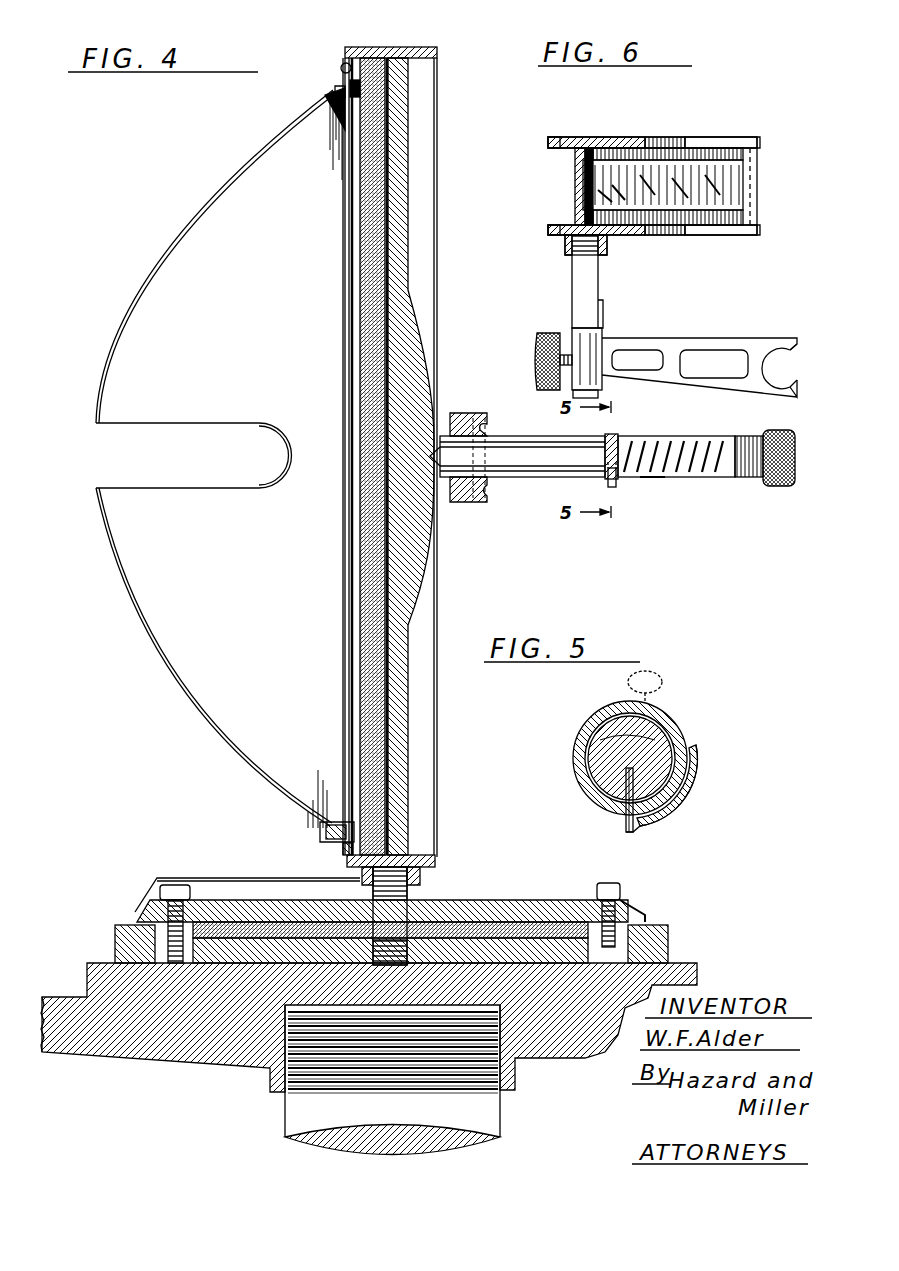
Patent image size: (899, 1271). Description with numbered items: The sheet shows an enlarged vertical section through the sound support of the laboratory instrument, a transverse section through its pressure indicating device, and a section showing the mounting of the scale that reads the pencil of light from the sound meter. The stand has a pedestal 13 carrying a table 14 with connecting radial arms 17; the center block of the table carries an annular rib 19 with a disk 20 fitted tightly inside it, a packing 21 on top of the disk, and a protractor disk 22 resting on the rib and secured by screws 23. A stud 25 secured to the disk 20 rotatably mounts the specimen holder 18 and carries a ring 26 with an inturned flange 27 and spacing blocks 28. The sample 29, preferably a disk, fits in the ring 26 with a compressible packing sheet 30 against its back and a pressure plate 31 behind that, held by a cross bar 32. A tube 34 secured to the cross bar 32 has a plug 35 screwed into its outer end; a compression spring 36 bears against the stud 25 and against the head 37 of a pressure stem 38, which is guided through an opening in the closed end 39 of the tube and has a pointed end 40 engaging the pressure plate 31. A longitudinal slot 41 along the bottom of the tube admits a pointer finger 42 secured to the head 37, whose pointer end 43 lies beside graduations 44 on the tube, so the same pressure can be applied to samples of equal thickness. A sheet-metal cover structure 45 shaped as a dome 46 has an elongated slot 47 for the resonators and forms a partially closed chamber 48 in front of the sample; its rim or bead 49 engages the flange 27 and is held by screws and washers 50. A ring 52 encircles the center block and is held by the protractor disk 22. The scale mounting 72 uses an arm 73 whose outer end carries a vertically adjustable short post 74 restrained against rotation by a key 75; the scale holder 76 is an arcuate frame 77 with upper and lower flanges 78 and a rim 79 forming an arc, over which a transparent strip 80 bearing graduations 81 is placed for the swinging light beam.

In FIG. 4, the pedestal 13 is at (297, 1119).
In FIG. 4, the table 14 is at (240, 1072).
In FIG. 4, the radial arms 17 is at (58, 1047).
In FIG. 4, the specimen holder 18 is at (384, 47).
In FIG. 4, the annular rib 19 is at (153, 937).
In FIG. 4, the disk 20 is at (210, 952).
In FIG. 4, the packing 21 is at (214, 928).
In FIG. 4, the protractor disk 22 is at (246, 906).
In FIG. 4, the screws 23 is at (598, 891).
In FIG. 4, the stud 25 is at (395, 905).
In FIG. 4, the ring 26 is at (430, 866).
In FIG. 4, the inturned flange 27 is at (345, 855).
In FIG. 4, the spacing blocks 28 is at (346, 62).
In FIG. 4, the sample 29 is at (370, 579).
In FIG. 4, the packing sheet 30 is at (386, 606).
In FIG. 4, the pressure plate 31 is at (408, 577).
In FIG. 4, the cross bar 32 is at (482, 409).
In FIG. 4, the tube 34 is at (668, 441).
In FIG. 5, the tube 34 is at (673, 724).
In FIG. 4, the plug 35 is at (772, 486).
In FIG. 4, the compression spring 36 is at (745, 478).
In FIG. 5, the compression spring 36 is at (645, 686).
In FIG. 4, the head 37 is at (613, 438).
In FIG. 5, the head 37 is at (607, 750).
In FIG. 4, the pressure stem 38 is at (507, 452).
In FIG. 4, the closed end 39 is at (460, 502).
In FIG. 4, the pointed end 40 is at (442, 446).
In FIG. 4, the longitudinal slot 41 is at (655, 478).
In FIG. 5, the longitudinal slot 41 is at (623, 818).
In FIG. 4, the pointer finger 42 is at (607, 480).
In FIG. 5, the pointer finger 42 is at (668, 824).
In FIG. 5, the pointer end 43 is at (699, 764).
In FIG. 5, the graduations 44 is at (688, 748).
In FIG. 4, the cover structure 45 is at (206, 732).
In FIG. 4, the dome 46 is at (172, 681).
In FIG. 4, the elongated slot 47 is at (184, 487).
In FIG. 4, the chamber 48 is at (258, 339).
In FIG. 4, the bead 49 is at (336, 88).
In FIG. 4, the screws and washers 50 is at (326, 832).
In FIG. 4, the ring 52 is at (665, 948).
In FIG. 6, the scale mounting 72 is at (726, 339).
In FIG. 6, the arm 73 is at (766, 344).
In FIG. 6, the adjustable short post 74 is at (590, 283).
In FIG. 6, the key 75 is at (602, 318).
In FIG. 6, the scale holder 76 is at (630, 140).
In FIG. 6, the arcuate frame 77 is at (728, 236).
In FIG. 6, the flanges 78 is at (560, 137).
In FIG. 6, the rim 79 is at (592, 148).
In FIG. 6, the transparent strip 80 is at (575, 176).
In FIG. 6, the graduations 81 is at (672, 175).